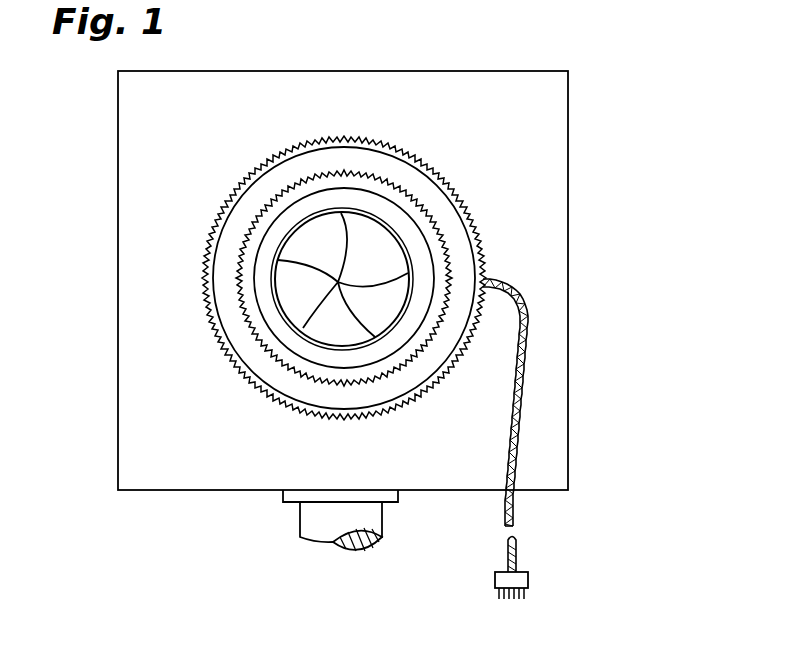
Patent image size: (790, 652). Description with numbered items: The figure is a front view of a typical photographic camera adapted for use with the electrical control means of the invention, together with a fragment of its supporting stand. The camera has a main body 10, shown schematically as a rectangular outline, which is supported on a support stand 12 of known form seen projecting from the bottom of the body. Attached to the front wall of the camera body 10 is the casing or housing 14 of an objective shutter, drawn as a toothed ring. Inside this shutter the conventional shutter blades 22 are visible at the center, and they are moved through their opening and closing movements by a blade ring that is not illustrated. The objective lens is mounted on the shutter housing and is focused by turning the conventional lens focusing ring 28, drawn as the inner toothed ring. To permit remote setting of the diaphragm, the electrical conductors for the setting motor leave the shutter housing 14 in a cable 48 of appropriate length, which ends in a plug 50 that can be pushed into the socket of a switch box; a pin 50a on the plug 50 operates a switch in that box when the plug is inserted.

The camera main body 10 is at (563, 401).
The support stand 12 is at (375, 527).
The shutter housing 14 is at (448, 213).
The shutter blades 22 is at (372, 276).
The lens focusing ring 28 is at (236, 302).
The cable 48 is at (512, 552).
The plug 50 is at (526, 579).
The pin 50a is at (498, 596).